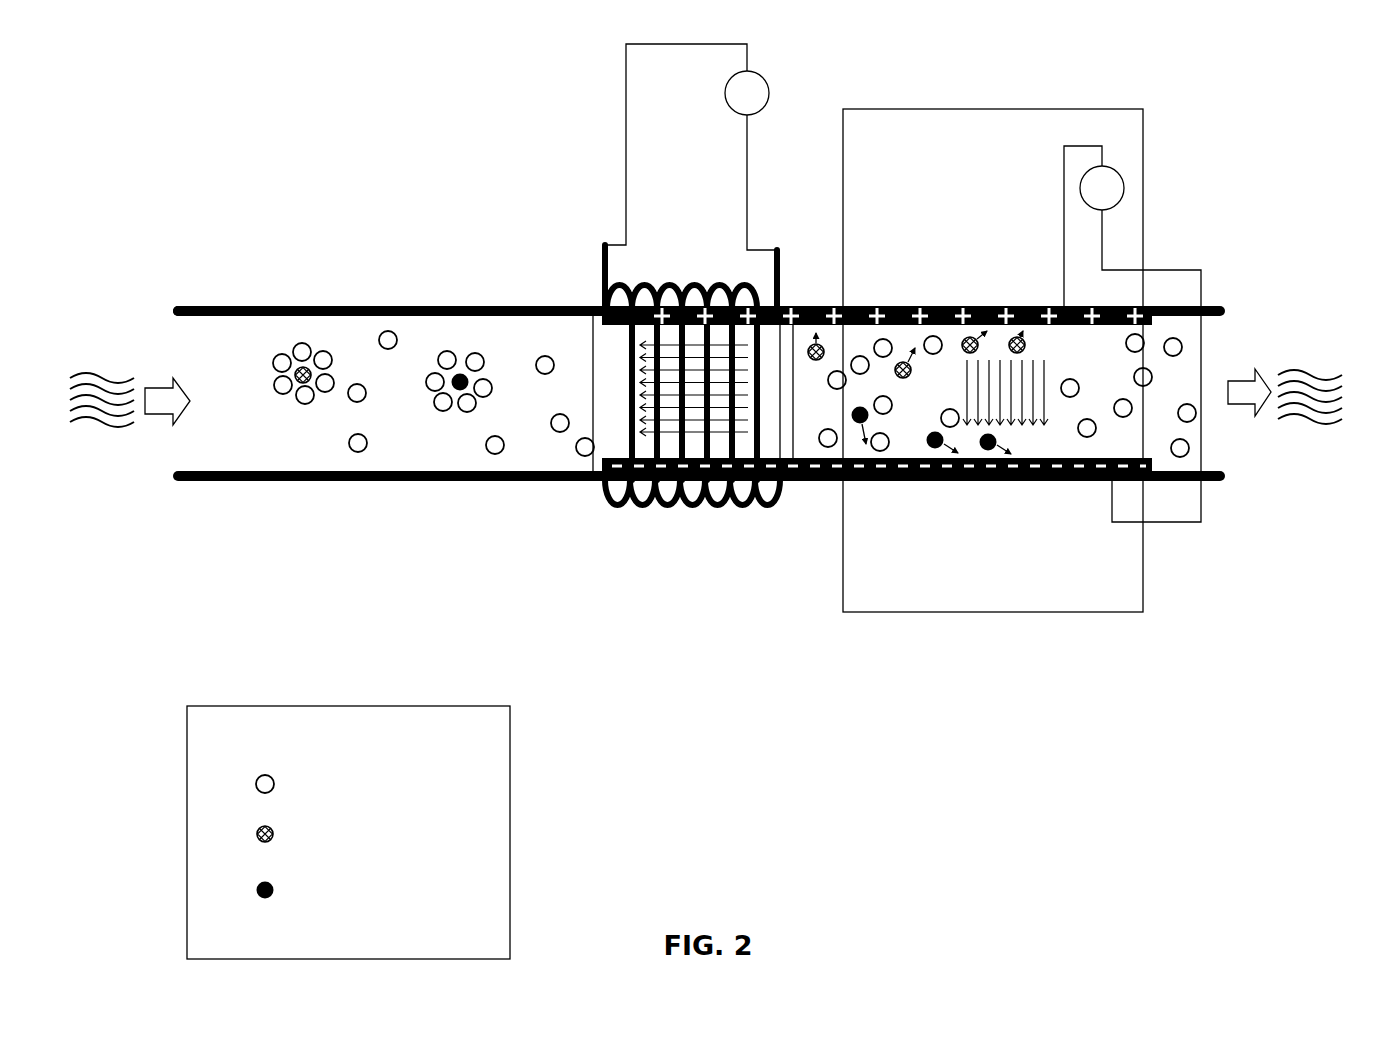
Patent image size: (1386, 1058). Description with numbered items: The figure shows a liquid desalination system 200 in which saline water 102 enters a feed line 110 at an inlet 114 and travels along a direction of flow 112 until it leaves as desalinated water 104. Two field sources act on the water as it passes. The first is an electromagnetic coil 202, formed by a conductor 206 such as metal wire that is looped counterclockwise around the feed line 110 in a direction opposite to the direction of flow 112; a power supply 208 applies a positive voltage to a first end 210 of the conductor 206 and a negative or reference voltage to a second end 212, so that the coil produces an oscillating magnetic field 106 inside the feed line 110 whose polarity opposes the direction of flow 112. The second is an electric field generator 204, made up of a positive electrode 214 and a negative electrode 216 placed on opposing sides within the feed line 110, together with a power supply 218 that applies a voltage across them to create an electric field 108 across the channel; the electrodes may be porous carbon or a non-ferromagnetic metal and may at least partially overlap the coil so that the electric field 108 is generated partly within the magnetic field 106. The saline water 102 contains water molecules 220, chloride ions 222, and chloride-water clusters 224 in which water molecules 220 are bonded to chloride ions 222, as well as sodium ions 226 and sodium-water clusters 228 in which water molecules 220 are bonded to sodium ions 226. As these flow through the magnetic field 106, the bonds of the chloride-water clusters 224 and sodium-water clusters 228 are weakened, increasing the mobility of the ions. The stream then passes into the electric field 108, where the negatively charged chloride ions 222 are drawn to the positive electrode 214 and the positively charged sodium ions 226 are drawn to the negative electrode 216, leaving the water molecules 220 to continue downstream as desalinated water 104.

The liquid desalination system 200 is at (348, 505).
The saline water 102 is at (105, 362).
The desalinated water 104 is at (1303, 364).
The oscillating magnetic field 106 is at (664, 376).
The electric field 108 is at (1044, 436).
The feed line 110 is at (222, 306).
The direction of flow 112 is at (165, 404).
The inlet 114 is at (170, 330).
The electromagnetic coil 202 is at (694, 520).
The electric field generator 204 is at (955, 109).
The conductor 206 is at (651, 296).
The power supply 208 is at (770, 93).
The first end of the conductor 210 is at (783, 270).
The second end of the conductor 212 is at (600, 248).
The positive electrode 214 is at (937, 298).
The negative electrode 216 is at (910, 490).
The power supply 218 is at (1124, 188).
The water molecules 220 is at (283, 357).
The chloride ions 222 is at (311, 368).
The chloride-water clusters 224 is at (288, 412).
The sodium ions 226 is at (462, 363).
The sodium-water clusters 228 is at (447, 420).